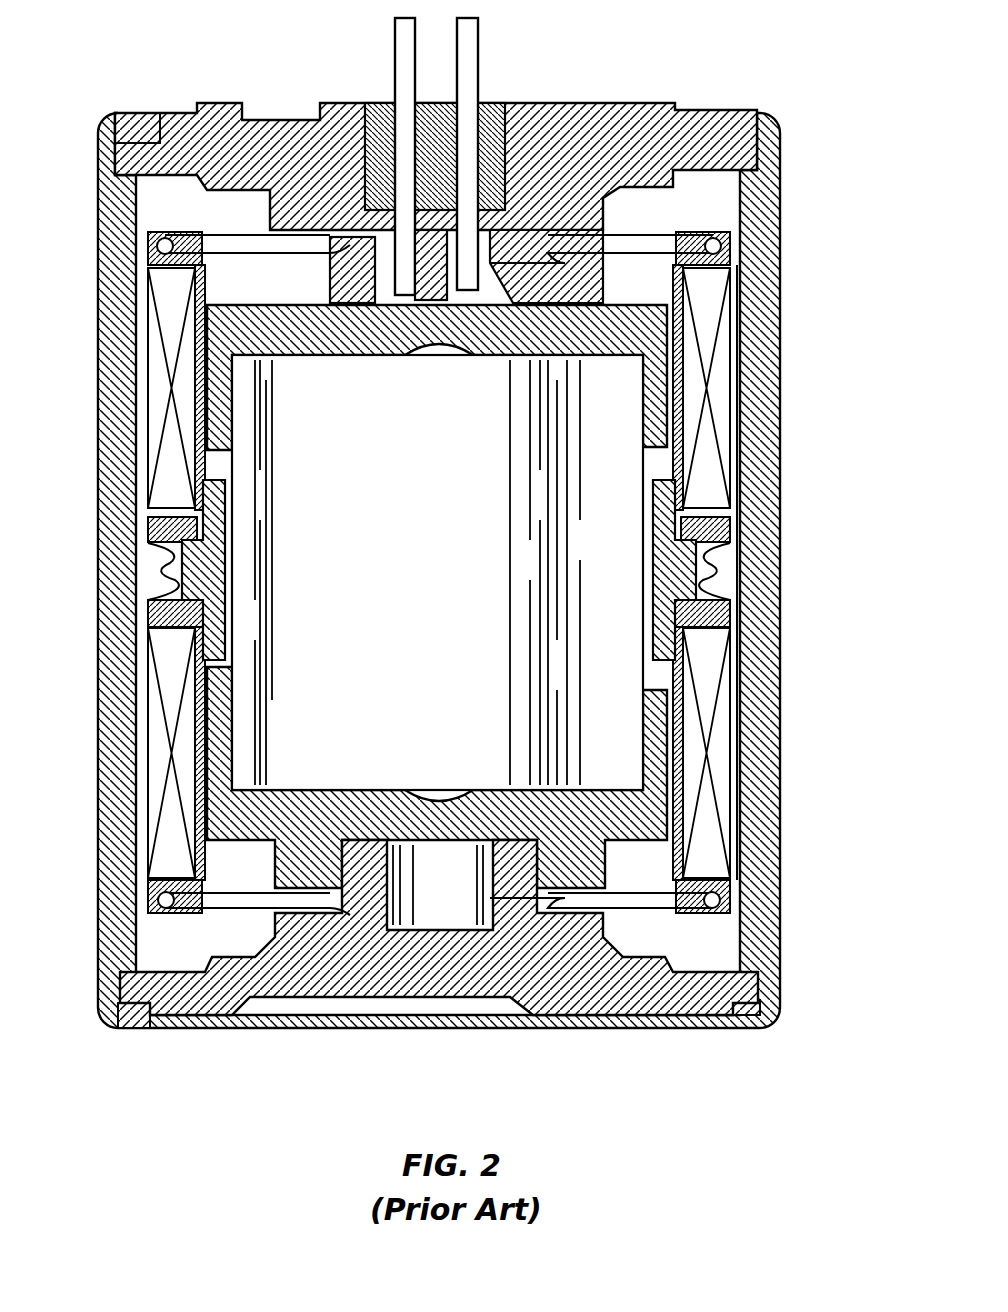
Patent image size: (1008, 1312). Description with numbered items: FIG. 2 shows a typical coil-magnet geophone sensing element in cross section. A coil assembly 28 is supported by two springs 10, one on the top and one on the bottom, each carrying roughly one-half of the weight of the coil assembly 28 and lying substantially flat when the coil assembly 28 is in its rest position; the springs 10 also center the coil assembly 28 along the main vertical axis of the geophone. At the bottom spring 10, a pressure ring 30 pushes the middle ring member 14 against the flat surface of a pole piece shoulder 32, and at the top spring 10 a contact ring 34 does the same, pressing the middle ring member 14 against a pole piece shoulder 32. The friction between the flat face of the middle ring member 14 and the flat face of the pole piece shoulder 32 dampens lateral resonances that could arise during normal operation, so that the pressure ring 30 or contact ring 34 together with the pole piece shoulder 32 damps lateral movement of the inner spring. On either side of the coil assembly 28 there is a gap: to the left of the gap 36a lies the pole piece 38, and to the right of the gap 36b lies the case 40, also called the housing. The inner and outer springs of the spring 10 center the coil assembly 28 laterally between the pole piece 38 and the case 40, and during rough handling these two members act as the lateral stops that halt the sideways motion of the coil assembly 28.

The spring 10 is at (620, 240).
The middle ring member 14 is at (273, 258).
The coil assembly 28 is at (690, 520).
The pressure ring 30 is at (548, 903).
The pole piece shoulder 32 is at (605, 290).
The contact ring 34 is at (548, 230).
The gap 36a is at (670, 332).
The gap 36b is at (730, 368).
The pole piece 38 is at (665, 447).
The case 40 is at (780, 672).